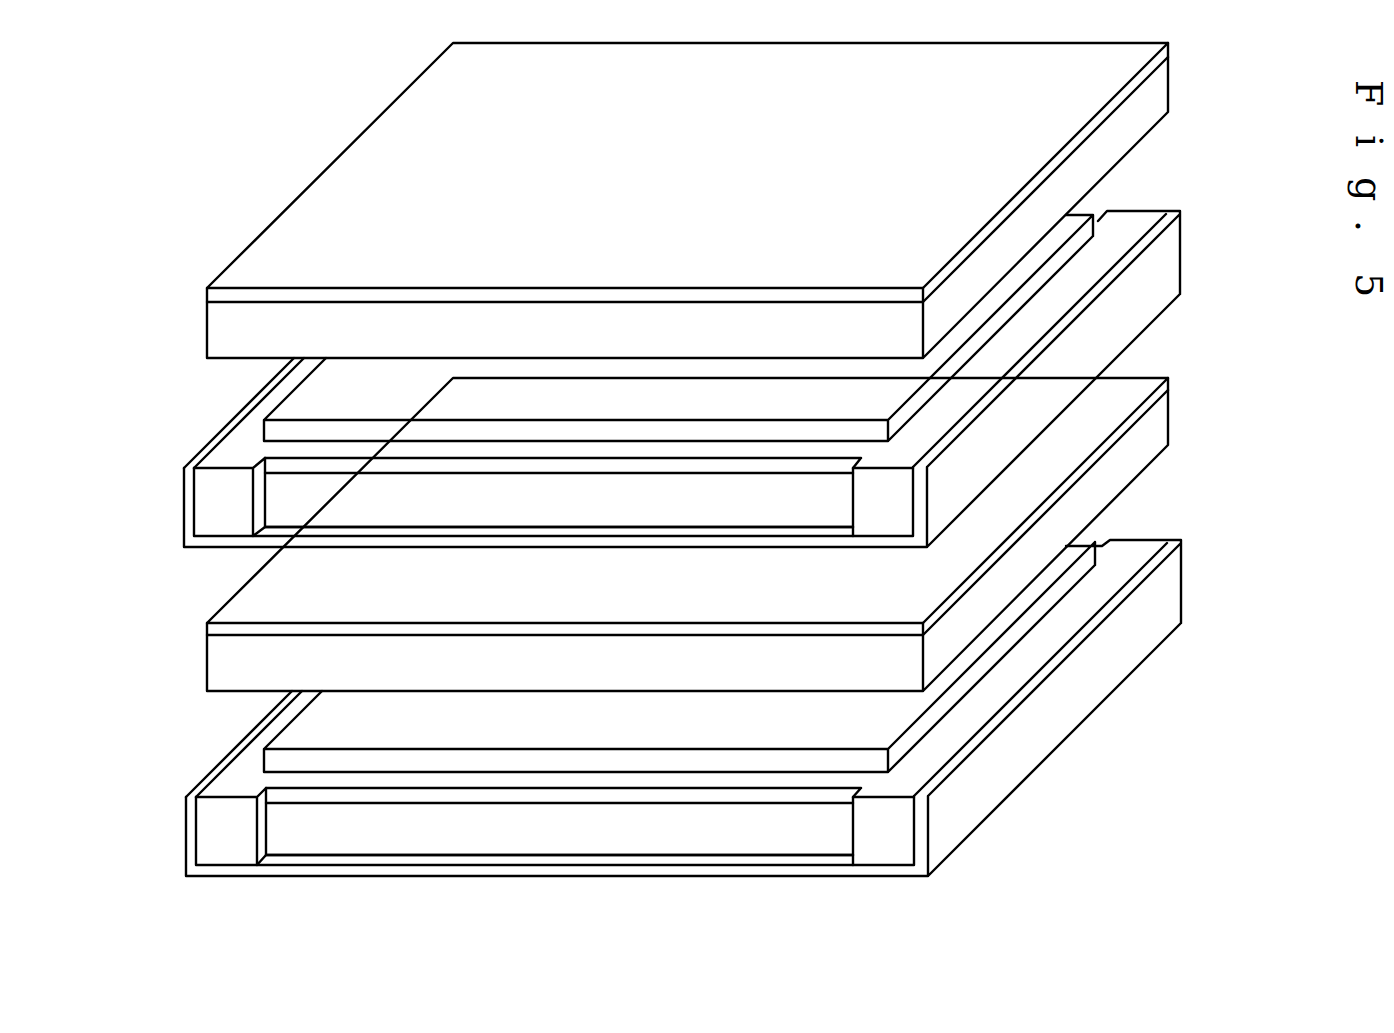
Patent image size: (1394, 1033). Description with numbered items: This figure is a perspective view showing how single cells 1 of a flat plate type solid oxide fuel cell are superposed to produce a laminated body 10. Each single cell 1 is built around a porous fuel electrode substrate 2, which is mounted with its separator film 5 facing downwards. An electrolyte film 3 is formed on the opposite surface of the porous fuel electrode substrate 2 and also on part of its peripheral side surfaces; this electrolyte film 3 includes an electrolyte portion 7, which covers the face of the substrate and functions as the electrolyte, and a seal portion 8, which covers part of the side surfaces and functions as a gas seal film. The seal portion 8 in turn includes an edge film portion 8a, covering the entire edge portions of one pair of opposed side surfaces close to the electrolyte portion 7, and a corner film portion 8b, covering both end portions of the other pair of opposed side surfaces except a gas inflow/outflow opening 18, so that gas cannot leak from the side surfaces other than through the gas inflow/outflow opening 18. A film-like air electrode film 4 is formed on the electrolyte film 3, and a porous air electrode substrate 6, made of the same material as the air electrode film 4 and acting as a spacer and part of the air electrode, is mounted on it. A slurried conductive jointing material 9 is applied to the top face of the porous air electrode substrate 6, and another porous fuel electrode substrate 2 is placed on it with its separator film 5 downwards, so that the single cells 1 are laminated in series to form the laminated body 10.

The laminated body 10 is at (165, 110).
The single cell 1 is at (1187, 43).
The conductive jointing material 9 is at (300, 212).
The porous air electrode substrate 6 is at (215, 327).
The air electrode film 4 is at (305, 404).
The separator film 5 is at (651, 528).
The edge film portion 8a is at (228, 431).
The corner film portion 8b is at (207, 483).
The electrolyte film 3 is at (750, 552).
The electrolyte portion 7 is at (803, 467).
The seal portion 8 is at (870, 520).
The porous fuel electrode substrate 2 is at (282, 508).
The gas inflow/outflow opening 18 is at (490, 518).